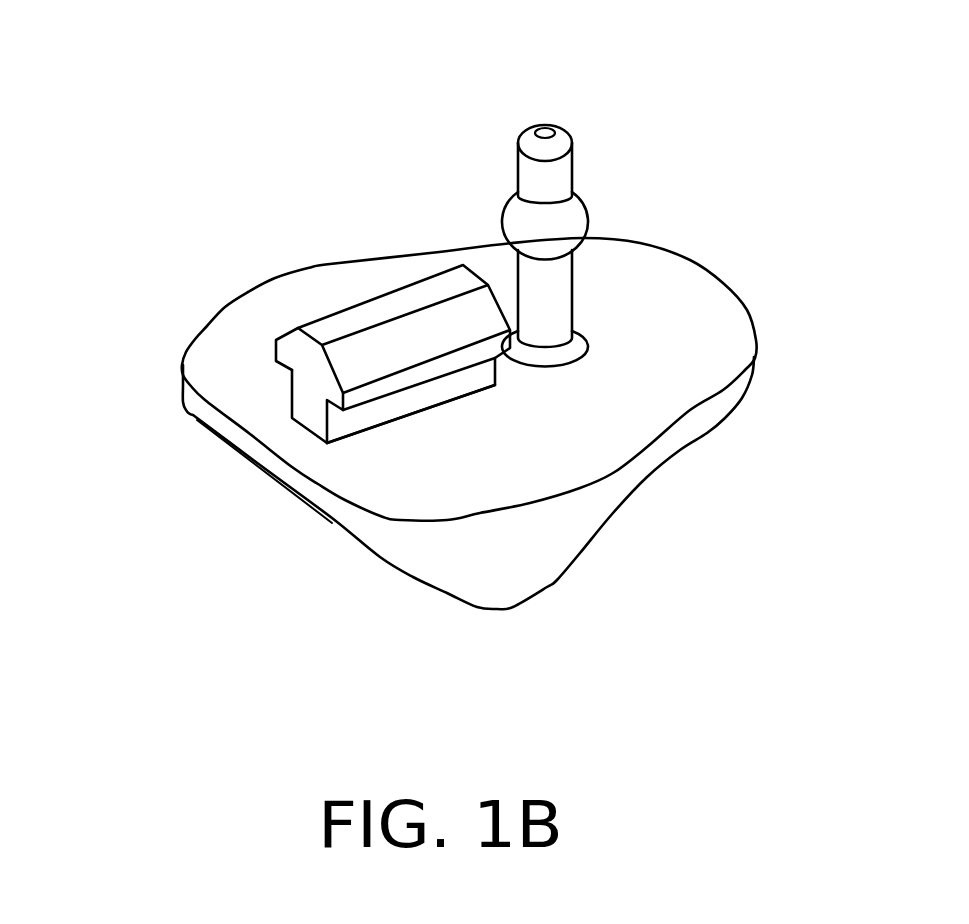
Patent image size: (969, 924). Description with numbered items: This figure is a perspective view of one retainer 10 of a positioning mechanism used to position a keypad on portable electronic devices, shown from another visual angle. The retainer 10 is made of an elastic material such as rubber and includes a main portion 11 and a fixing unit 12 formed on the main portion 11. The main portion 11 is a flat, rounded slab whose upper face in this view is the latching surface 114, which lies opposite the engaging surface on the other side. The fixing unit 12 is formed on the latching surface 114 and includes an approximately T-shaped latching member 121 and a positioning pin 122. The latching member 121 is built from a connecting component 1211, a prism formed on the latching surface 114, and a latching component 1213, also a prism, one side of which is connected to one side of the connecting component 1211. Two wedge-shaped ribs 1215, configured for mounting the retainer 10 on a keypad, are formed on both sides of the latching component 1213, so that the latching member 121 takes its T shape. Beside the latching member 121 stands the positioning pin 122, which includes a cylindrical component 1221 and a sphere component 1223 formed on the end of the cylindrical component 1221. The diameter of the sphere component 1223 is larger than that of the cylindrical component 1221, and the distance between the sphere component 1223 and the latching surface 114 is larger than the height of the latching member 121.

The retainer 10 is at (770, 320).
The main portion 11 is at (545, 527).
The latching surface 114 is at (613, 407).
The fixing unit 12 is at (482, 83).
The latching member 121 is at (405, 298).
The connecting component 1211 is at (310, 408).
The latching component 1213 is at (307, 360).
The wedge-shaped ribs 1215 is at (398, 353).
The positioning pin 122 is at (535, 175).
The cylindrical component 1221 is at (550, 313).
The sphere component 1223 is at (567, 223).